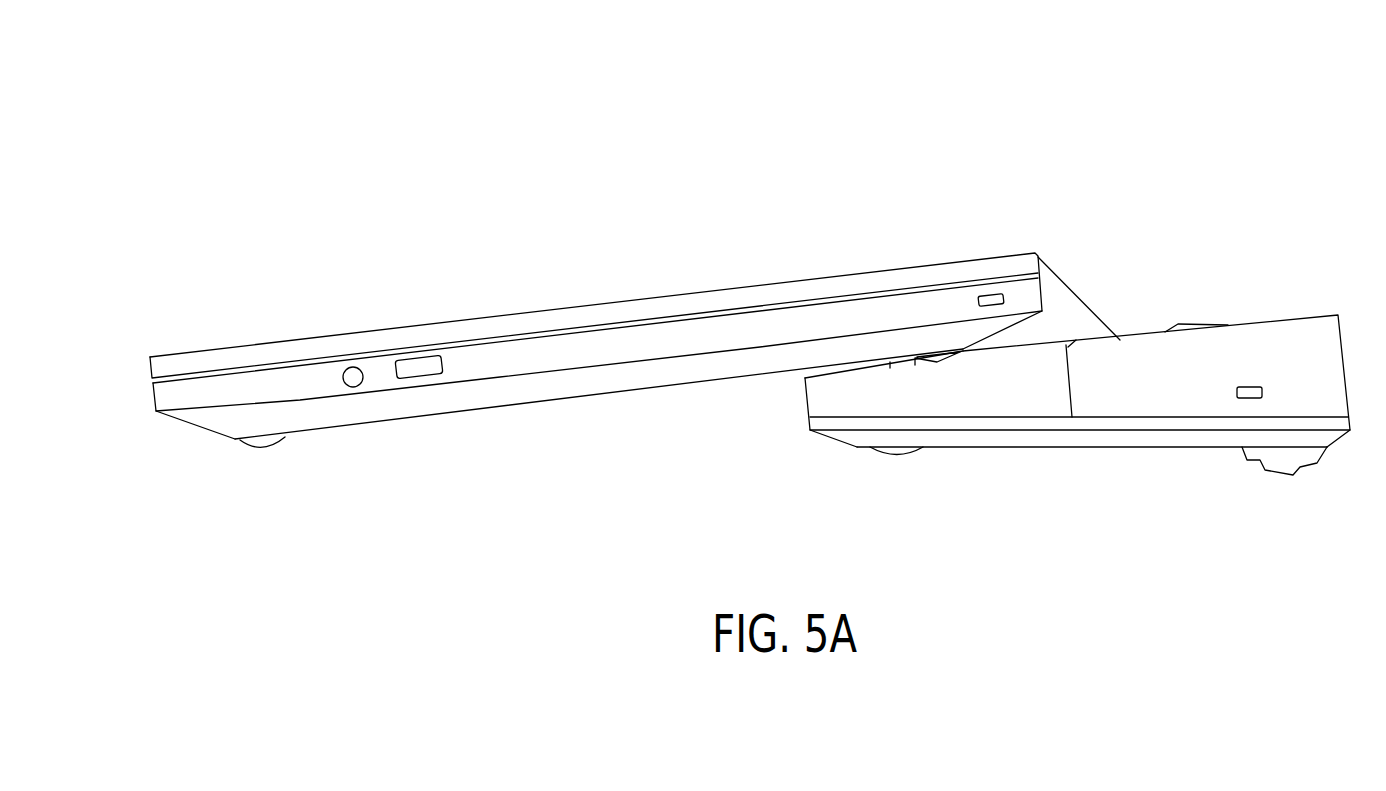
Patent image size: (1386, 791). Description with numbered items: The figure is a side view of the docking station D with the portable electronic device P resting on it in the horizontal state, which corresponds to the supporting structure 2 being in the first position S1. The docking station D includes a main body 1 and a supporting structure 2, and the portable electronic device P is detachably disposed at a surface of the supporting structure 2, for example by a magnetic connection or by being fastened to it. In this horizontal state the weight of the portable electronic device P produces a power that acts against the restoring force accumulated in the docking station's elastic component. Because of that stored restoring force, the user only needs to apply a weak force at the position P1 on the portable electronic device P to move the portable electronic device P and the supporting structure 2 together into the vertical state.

The first position S1 is at (380, 123).
The portable electronic device P is at (596, 384).
The position P1 is at (190, 418).
The docking station D is at (1077, 376).
The main body 1 is at (1175, 387).
The supporting structure 2 is at (973, 387).